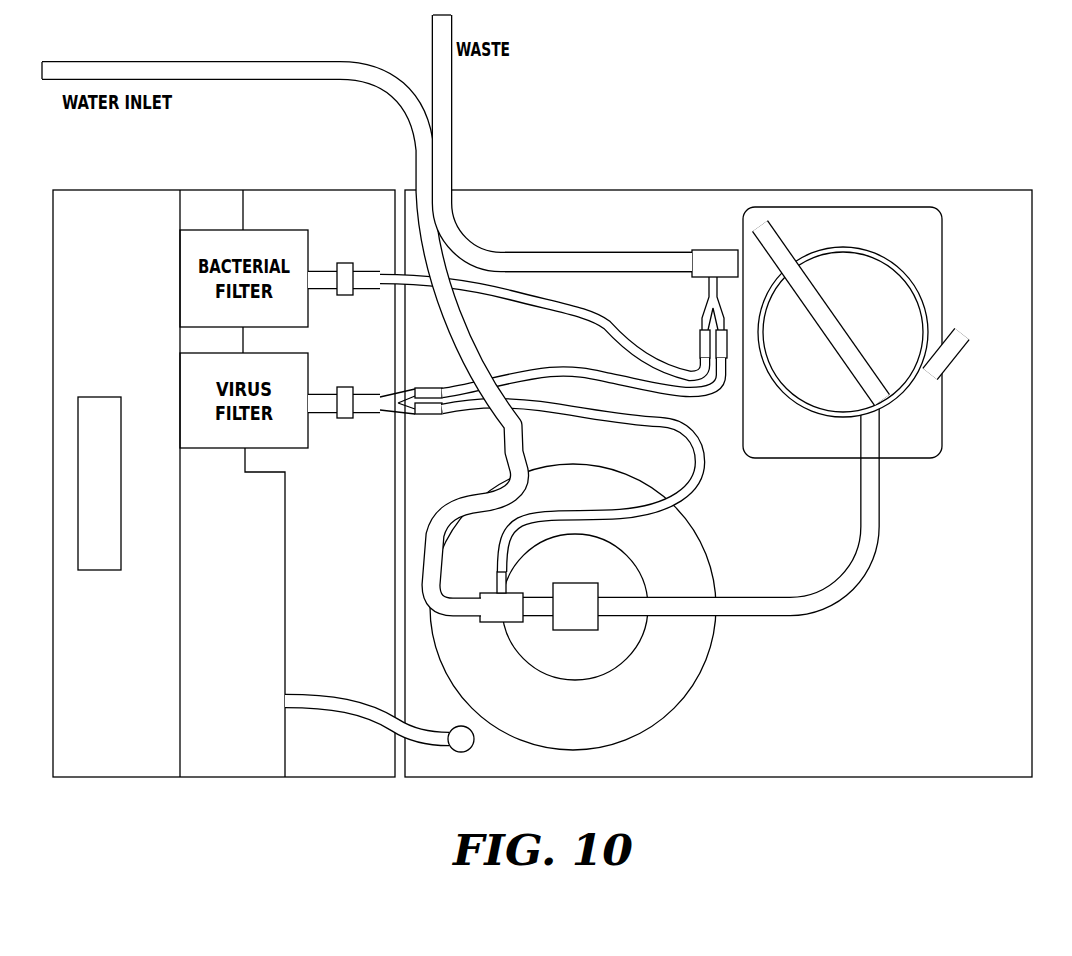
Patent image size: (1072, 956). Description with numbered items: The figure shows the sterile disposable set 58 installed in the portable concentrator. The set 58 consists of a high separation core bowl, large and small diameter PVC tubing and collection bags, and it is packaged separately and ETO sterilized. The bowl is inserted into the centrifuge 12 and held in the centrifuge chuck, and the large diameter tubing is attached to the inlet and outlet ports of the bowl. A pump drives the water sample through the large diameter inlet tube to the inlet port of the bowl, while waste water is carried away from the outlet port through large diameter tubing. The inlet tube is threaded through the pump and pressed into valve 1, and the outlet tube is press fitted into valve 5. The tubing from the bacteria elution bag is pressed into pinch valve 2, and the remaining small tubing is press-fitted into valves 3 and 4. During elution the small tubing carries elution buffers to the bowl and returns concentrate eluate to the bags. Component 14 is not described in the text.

The centrifuge 12 is at (687, 670).
The valve assembly 14 is at (893, 293).
The disposable set 58 is at (462, 177).
The valve 1 is at (598, 262).
The pinch valve 2 is at (542, 327).
The valve 3 is at (581, 376).
The valve 4 is at (571, 487).
The valve 5 is at (286, 334).